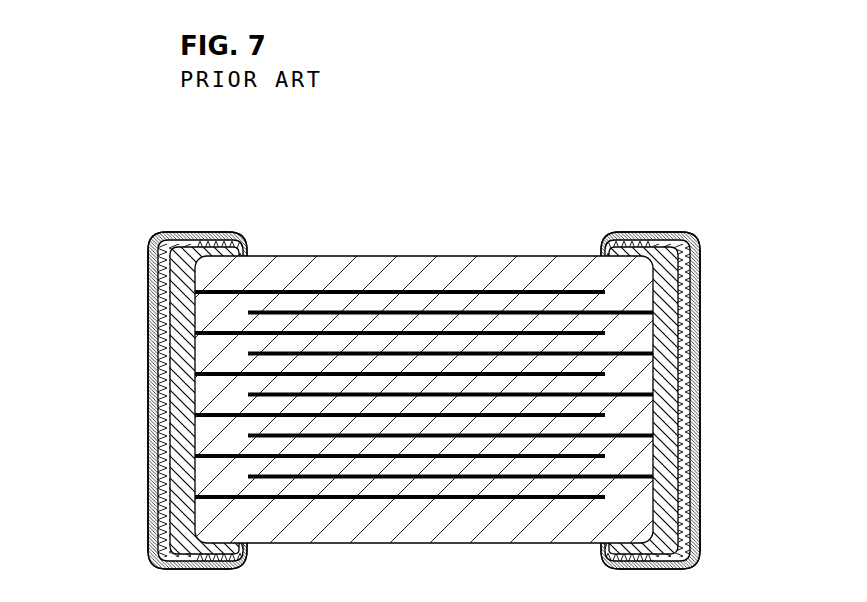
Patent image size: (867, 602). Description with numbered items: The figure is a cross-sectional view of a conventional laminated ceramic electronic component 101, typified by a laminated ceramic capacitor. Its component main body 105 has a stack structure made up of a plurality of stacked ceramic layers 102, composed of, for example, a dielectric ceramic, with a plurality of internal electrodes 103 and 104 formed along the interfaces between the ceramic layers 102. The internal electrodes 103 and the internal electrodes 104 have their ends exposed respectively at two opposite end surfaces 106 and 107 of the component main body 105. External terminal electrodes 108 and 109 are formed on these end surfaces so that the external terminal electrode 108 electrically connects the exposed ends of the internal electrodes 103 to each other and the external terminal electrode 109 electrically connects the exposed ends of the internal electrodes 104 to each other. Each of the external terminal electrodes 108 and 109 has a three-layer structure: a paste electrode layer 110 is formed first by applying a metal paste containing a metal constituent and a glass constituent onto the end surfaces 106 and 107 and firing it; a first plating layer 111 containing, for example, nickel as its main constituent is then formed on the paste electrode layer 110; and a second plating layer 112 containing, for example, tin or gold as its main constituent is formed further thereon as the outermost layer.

The laminated ceramic electronic component 101 is at (265, 153).
The ceramic layer 102 is at (446, 322).
The internal electrode 103 is at (367, 333).
The internal electrode 104 is at (524, 353).
The component main body 105 is at (569, 250).
The end surface 106 is at (180, 424).
The end surface 107 is at (667, 423).
The external terminal electrode 108 is at (70, 285).
The external terminal electrode 109 is at (774, 258).
The paste electrode layer 110 is at (178, 292).
The first plating layer 111 is at (168, 330).
The second plating layer 112 is at (152, 364).